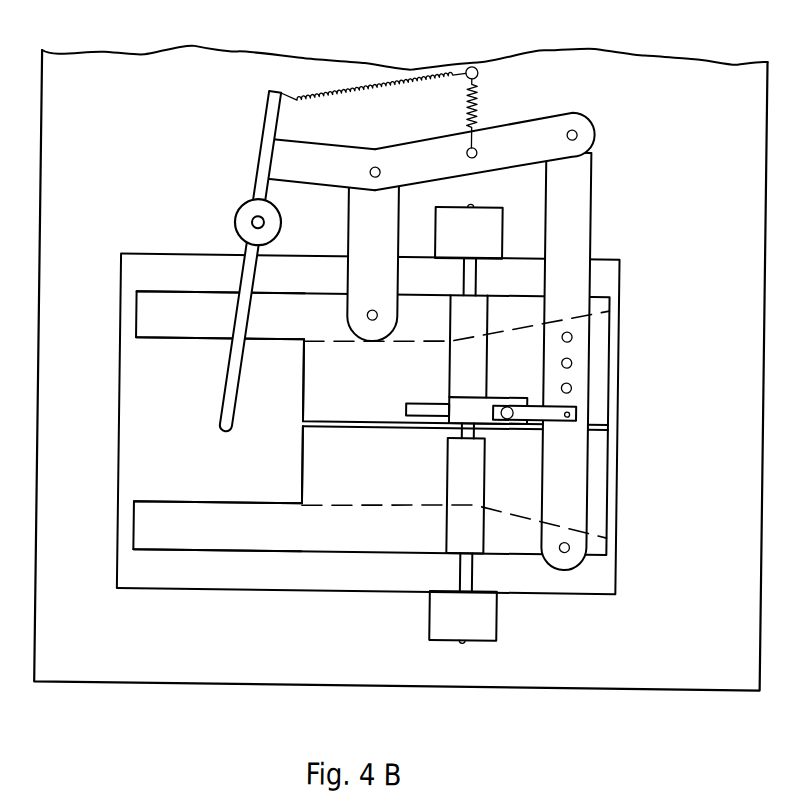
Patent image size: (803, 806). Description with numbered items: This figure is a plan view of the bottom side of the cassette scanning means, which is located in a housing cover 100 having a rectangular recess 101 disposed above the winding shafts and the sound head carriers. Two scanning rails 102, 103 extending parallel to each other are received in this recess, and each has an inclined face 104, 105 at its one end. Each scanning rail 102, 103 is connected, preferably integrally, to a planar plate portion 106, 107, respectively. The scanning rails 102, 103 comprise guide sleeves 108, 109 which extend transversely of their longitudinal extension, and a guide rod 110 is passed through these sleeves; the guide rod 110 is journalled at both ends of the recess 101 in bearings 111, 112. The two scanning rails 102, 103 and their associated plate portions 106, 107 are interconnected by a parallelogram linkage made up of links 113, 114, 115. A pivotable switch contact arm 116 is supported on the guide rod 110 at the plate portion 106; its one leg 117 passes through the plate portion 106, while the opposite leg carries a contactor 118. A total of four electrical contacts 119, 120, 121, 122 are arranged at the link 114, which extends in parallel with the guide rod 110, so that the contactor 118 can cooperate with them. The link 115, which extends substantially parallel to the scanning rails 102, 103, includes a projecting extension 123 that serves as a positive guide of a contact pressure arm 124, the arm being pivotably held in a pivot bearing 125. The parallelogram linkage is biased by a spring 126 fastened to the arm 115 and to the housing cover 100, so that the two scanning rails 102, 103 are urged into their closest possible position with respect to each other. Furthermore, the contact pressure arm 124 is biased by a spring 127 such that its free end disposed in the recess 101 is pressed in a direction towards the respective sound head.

The housing cover 100 is at (668, 68).
The rectangular recess 101 is at (121, 458).
The scanning rail 102 is at (178, 330).
The scanning rail 103 is at (163, 520).
The inclined face 104 is at (512, 334).
The inclined face 105 is at (503, 510).
The plate portion 106 is at (320, 376).
The plate portion 107 is at (313, 466).
The guide sleeve 108 is at (462, 361).
The guide sleeve 109 is at (458, 476).
The guide rod 110 is at (466, 277).
The bearing 111 is at (484, 217).
The bearing 112 is at (496, 628).
The link of parallelogram linkage 113 is at (359, 234).
The link of parallelogram linkage 114 is at (575, 229).
The link of parallelogram linkage 115 is at (521, 131).
The switch contact arm 116 is at (461, 411).
The leg 117 is at (409, 412).
The contactor 118 is at (563, 416).
The electrical contact 119 is at (572, 331).
The electrical contact 120 is at (574, 358).
The electrical contact 121 is at (576, 385).
The electrical contact 122 is at (579, 411).
The projecting extension 123 is at (301, 157).
The contact pressure arm 124 is at (241, 270).
The pivot bearing 125 is at (244, 219).
The spring 126 is at (474, 98).
The spring 127 is at (364, 84).